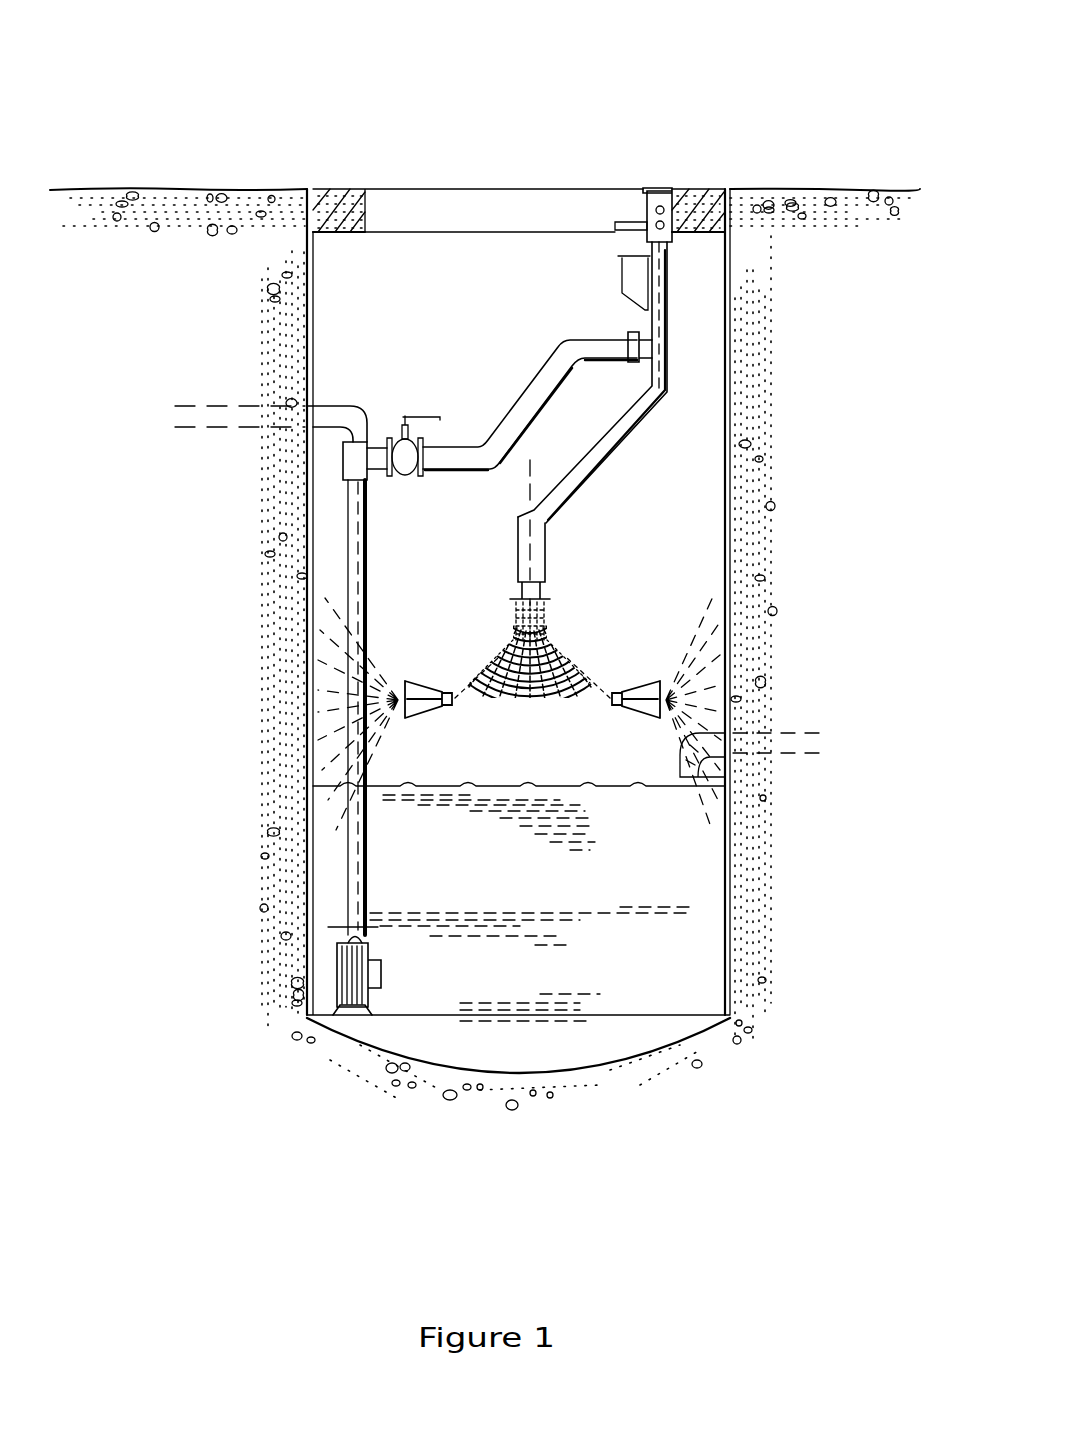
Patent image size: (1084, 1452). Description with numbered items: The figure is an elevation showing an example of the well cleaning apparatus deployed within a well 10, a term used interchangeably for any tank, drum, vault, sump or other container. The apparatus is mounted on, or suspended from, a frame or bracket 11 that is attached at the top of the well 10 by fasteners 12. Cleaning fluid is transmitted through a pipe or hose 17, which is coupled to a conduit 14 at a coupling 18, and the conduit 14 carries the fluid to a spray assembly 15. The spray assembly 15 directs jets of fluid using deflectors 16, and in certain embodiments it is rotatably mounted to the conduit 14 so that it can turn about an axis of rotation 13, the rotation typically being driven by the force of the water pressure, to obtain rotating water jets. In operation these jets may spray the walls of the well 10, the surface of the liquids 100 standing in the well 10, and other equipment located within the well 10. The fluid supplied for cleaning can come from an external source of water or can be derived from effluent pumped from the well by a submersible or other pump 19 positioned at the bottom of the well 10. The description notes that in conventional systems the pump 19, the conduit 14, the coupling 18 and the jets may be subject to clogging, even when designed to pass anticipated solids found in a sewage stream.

The well 10 is at (511, 250).
The frame or bracket 11 is at (640, 197).
The fasteners 12 is at (667, 204).
The axis of rotation 13 is at (530, 485).
The conduit 14 is at (610, 462).
The spray assembly 15 is at (470, 647).
The deflectors 16 is at (458, 714).
The pipe or hose 17 is at (523, 385).
The coupling 18 is at (641, 363).
The pump 19 is at (381, 996).
The liquids 100 is at (675, 972).